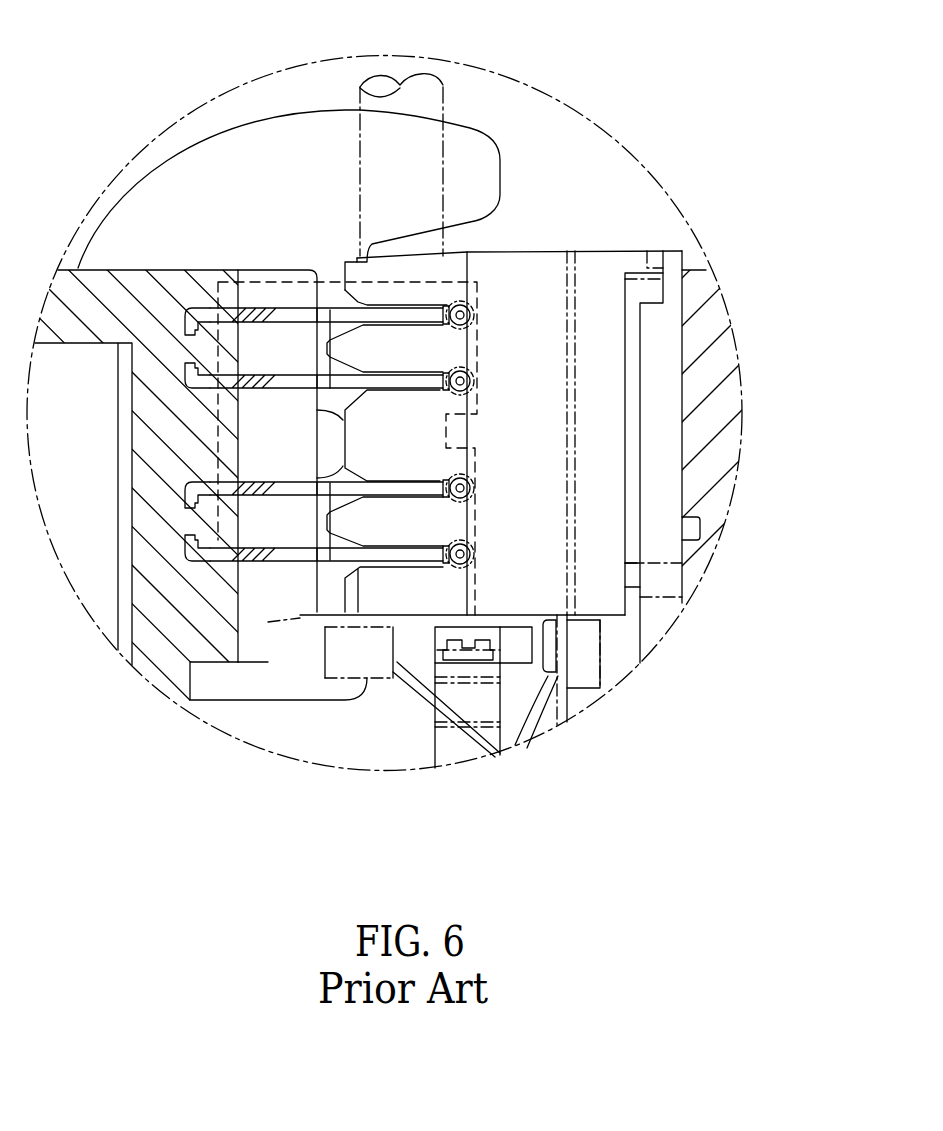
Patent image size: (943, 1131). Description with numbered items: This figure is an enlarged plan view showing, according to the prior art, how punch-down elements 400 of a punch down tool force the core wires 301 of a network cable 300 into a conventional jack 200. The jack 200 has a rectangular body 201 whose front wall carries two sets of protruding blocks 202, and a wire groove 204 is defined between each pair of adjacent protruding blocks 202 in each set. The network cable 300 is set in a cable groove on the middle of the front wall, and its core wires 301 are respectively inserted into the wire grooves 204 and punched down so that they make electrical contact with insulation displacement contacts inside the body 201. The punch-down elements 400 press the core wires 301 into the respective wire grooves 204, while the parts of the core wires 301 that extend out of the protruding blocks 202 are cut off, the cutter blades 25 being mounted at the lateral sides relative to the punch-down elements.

The jack 200 is at (592, 542).
The rectangular body 201 is at (572, 252).
The protruding blocks 202 is at (395, 280).
The wire groove 204 is at (402, 562).
The cutter blades 25 is at (332, 280).
The network cable 300 is at (445, 103).
The core wires 301 is at (470, 306).
The punch-down elements 400 is at (280, 330).